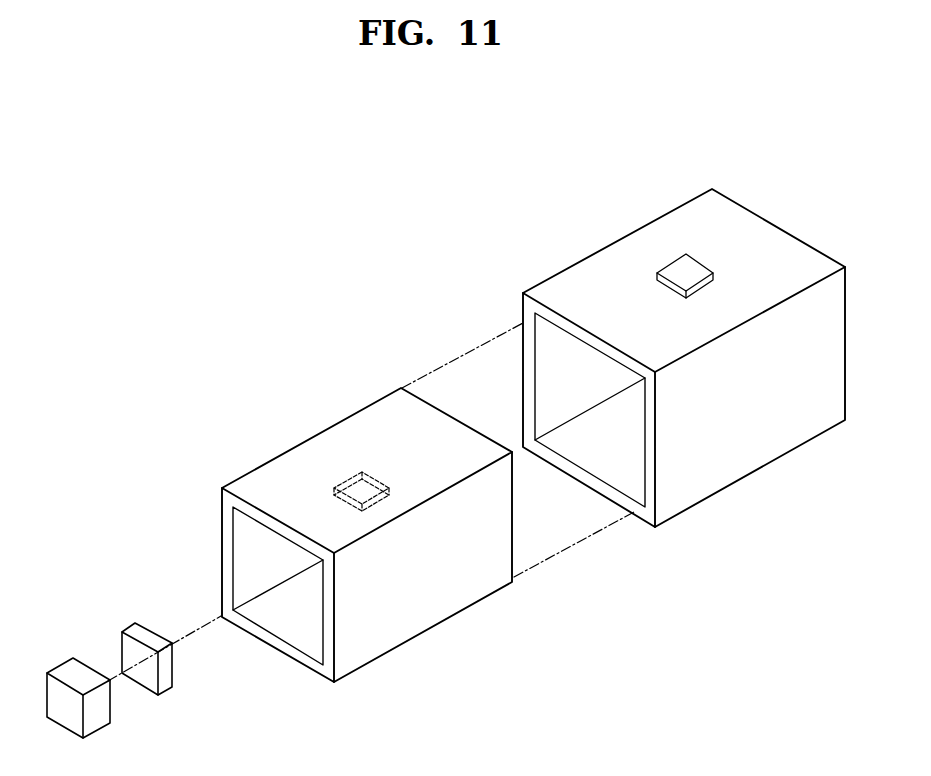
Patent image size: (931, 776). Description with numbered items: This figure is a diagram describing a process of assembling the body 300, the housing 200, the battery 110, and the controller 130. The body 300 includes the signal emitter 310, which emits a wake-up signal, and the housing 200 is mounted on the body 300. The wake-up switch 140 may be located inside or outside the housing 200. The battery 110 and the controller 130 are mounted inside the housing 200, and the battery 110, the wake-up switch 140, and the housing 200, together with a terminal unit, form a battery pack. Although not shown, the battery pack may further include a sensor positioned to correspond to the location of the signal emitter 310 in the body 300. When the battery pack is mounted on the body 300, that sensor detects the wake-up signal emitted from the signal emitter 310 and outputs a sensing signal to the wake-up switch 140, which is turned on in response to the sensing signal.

The battery 110 is at (130, 622).
The controller 130 is at (62, 663).
The wake-up switch 140 is at (352, 475).
The housing 200 is at (363, 420).
The body 300 is at (690, 213).
The signal emitter 310 is at (678, 267).